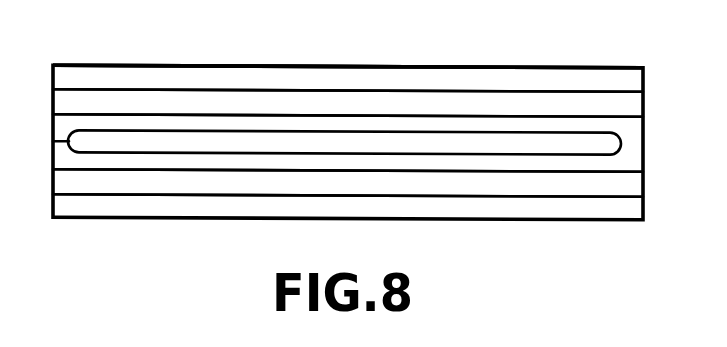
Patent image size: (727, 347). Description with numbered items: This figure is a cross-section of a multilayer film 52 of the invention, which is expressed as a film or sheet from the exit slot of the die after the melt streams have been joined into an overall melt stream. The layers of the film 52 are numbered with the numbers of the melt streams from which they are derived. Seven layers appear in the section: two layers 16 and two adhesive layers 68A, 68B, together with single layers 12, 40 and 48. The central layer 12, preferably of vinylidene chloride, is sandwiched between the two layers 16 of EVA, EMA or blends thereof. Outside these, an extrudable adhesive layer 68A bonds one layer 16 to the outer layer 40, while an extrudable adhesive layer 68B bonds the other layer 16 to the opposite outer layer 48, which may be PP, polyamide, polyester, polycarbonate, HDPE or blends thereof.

The layer 12 is at (115, 138).
The layer 16 is at (177, 122).
The layer 40 is at (370, 208).
The layer 48 is at (435, 78).
The film 52 is at (513, 67).
The layer 68A is at (245, 183).
The layer 68B is at (280, 103).